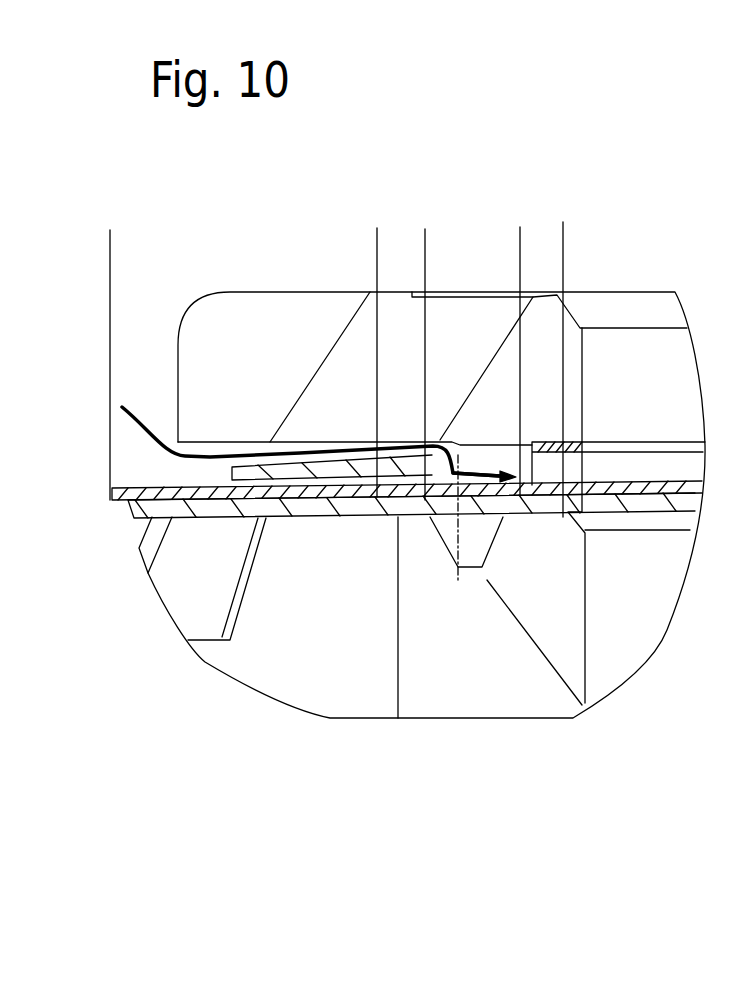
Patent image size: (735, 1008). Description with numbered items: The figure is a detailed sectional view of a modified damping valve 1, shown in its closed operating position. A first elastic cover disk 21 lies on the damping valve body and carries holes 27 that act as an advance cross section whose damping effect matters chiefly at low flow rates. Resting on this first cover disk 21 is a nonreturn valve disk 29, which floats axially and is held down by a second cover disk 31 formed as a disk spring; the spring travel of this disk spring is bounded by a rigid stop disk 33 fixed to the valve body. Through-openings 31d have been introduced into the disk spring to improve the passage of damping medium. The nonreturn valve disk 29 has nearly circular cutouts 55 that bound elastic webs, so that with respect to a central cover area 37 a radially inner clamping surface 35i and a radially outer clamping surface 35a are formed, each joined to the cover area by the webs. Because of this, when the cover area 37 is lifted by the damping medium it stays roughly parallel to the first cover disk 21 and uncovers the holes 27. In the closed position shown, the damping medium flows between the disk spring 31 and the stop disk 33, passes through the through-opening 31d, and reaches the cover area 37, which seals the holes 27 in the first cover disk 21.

The damping valve 1 is at (270, 762).
The first elastic cover disk 21 is at (200, 503).
The holes 27 is at (482, 572).
The nonreturn valve disk 29 is at (113, 500).
The second cover disk 31 is at (210, 477).
The through-openings 31d is at (483, 440).
The stop disk 33 is at (202, 350).
The radially outer clamping surface 35a is at (375, 238).
The radially inner clamping surface 35i is at (564, 231).
The cover area 37 is at (519, 233).
The cutouts 55 is at (402, 518).